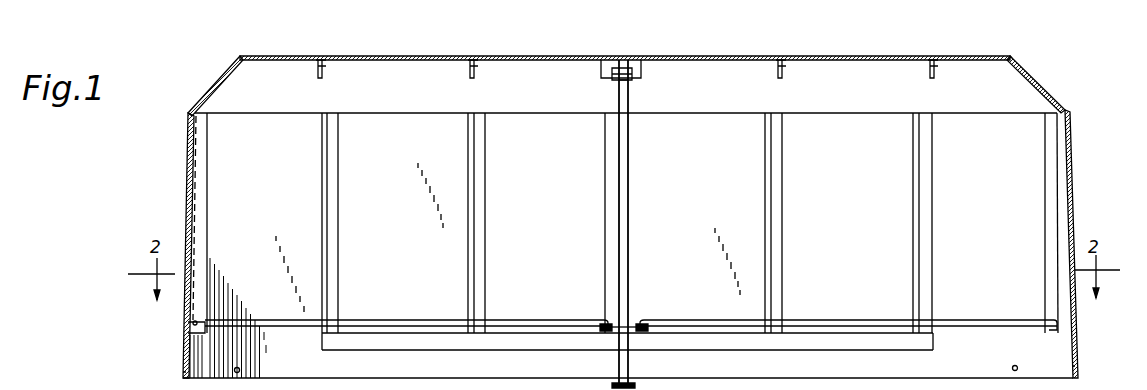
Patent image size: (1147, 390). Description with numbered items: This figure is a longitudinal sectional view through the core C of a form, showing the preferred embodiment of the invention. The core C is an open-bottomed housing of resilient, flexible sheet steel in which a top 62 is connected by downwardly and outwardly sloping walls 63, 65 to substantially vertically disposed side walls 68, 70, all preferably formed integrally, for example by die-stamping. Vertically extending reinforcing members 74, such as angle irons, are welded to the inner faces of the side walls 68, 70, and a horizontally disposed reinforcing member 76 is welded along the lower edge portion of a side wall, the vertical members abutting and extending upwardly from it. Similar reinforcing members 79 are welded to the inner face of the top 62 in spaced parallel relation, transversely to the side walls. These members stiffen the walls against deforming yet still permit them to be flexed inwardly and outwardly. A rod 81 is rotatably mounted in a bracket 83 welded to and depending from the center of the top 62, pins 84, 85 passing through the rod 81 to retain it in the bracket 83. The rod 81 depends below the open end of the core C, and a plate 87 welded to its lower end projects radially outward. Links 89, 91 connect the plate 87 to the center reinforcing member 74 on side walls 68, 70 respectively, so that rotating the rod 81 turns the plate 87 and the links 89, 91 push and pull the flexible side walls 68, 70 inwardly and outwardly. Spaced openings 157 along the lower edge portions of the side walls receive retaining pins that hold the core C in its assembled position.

The top 62 is at (730, 57).
The sloping wall 63 is at (222, 81).
The sloping wall 65 is at (1053, 97).
The side wall 68 is at (182, 193).
The side wall 70 is at (1070, 173).
The core C is at (1014, 54).
The reinforcing members 79 is at (322, 78).
The pin 84 is at (645, 70).
The bracket 83 is at (638, 82).
The pin 85 is at (630, 84).
The rod 81 is at (630, 228).
The reinforcing members 74 is at (209, 242).
The reinforcing member 76 is at (738, 345).
The link 89 is at (518, 320).
The link 91 is at (857, 300).
The plate 87 is at (642, 322).
The openings 157 is at (182, 371).